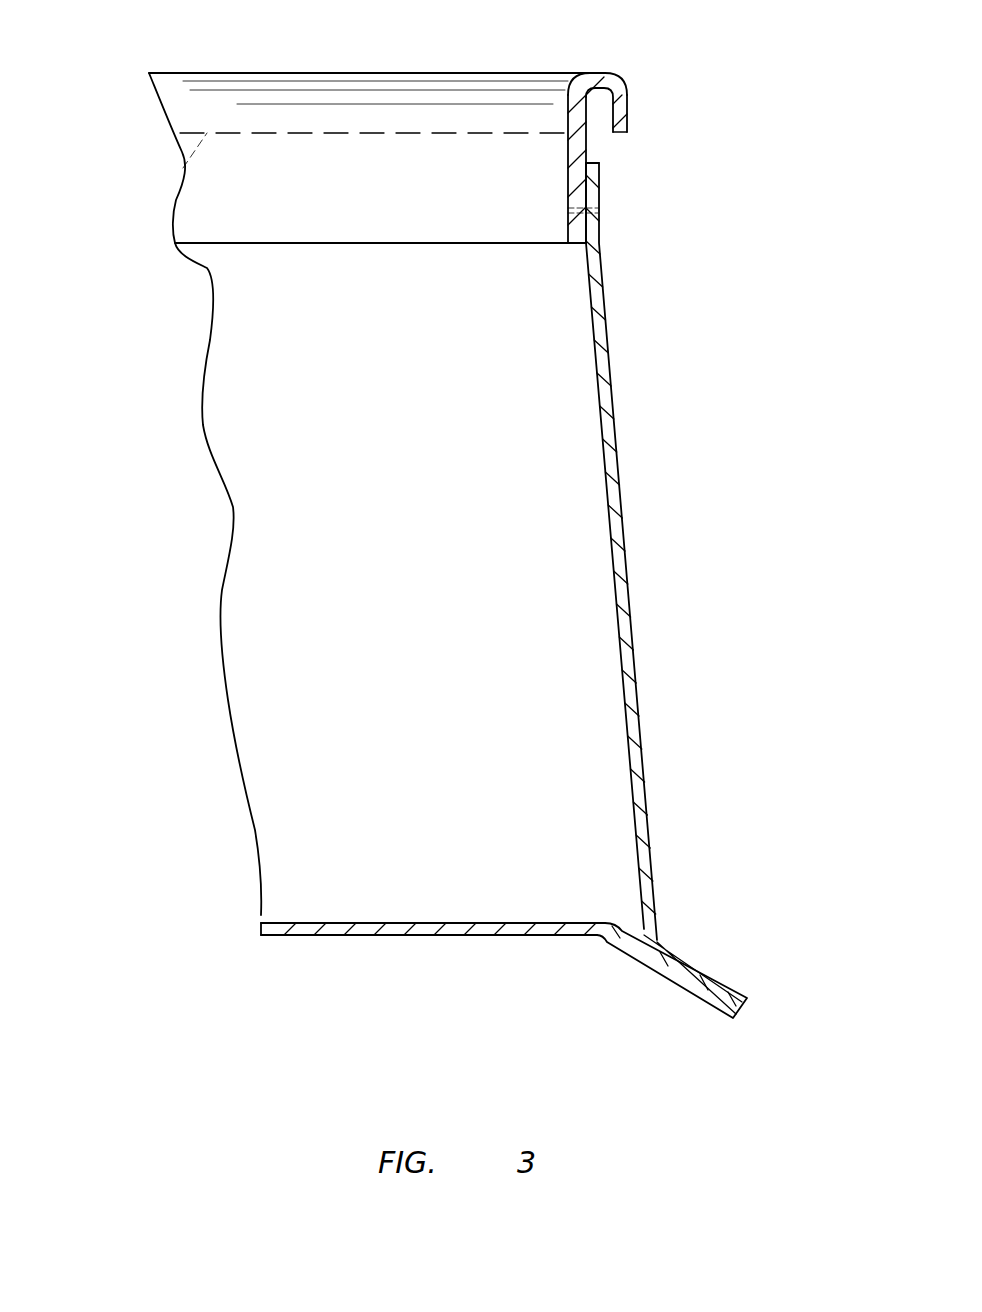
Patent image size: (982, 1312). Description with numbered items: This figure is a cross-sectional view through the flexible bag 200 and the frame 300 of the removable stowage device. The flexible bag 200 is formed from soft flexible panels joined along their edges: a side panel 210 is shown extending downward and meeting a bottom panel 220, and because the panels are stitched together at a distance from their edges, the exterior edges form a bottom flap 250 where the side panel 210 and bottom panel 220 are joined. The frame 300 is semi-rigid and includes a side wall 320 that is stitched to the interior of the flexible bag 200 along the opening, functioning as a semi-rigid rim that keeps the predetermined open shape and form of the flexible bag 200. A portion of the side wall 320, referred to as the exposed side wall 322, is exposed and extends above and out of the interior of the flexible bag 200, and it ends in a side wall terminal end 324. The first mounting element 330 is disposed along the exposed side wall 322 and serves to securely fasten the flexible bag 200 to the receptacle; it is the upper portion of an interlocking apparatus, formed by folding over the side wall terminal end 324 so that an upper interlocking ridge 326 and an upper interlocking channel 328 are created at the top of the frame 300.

The frame 300 is at (427, 72).
The exposed side wall 322 is at (568, 112).
The first mounting element 330 is at (603, 75).
The upper interlocking channel 328 is at (602, 99).
The upper interlocking ridge 326 is at (628, 112).
The side wall terminal end 324 is at (183, 170).
The side wall 320 is at (589, 152).
The flexible bag 200 is at (762, 567).
The side panel 210 is at (616, 431).
The bottom panel 220 is at (537, 938).
The bottom flap 250 is at (668, 946).